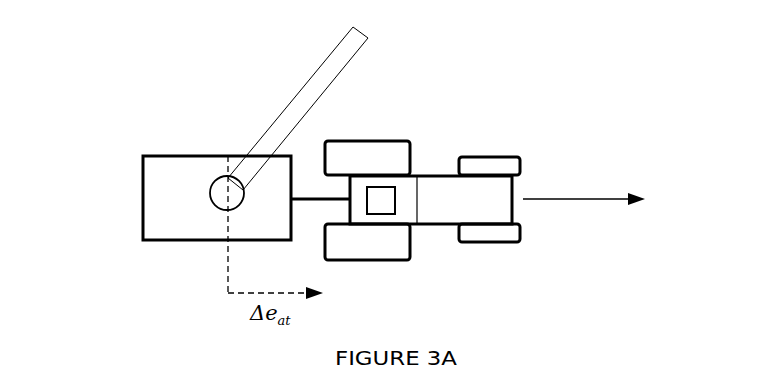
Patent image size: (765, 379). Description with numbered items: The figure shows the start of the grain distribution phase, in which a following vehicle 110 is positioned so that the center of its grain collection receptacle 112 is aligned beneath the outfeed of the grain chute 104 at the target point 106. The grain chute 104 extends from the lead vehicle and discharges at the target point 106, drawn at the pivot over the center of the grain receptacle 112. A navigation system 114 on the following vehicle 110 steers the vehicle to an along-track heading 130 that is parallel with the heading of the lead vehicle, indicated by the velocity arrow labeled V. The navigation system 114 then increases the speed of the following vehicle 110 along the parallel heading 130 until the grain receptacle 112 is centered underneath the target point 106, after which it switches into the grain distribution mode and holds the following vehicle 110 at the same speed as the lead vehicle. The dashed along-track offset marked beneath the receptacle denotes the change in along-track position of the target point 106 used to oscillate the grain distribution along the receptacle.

The grain chute 104 is at (288, 107).
The target point 106 is at (212, 184).
The following vehicle 110 is at (428, 225).
The grain collection receptacle 112 is at (177, 242).
The navigation system 114 is at (395, 197).
The along-track heading 130 is at (562, 199).